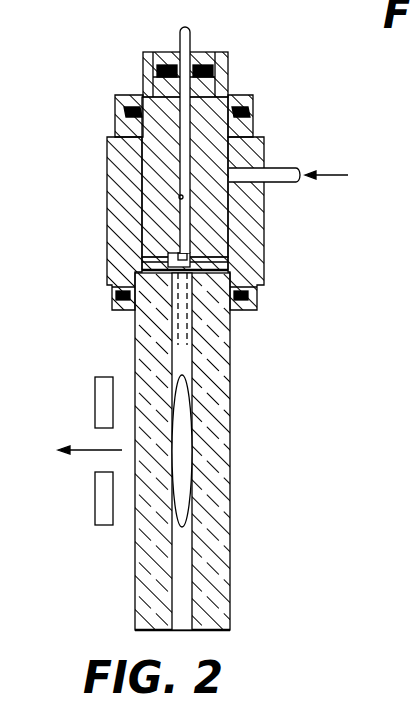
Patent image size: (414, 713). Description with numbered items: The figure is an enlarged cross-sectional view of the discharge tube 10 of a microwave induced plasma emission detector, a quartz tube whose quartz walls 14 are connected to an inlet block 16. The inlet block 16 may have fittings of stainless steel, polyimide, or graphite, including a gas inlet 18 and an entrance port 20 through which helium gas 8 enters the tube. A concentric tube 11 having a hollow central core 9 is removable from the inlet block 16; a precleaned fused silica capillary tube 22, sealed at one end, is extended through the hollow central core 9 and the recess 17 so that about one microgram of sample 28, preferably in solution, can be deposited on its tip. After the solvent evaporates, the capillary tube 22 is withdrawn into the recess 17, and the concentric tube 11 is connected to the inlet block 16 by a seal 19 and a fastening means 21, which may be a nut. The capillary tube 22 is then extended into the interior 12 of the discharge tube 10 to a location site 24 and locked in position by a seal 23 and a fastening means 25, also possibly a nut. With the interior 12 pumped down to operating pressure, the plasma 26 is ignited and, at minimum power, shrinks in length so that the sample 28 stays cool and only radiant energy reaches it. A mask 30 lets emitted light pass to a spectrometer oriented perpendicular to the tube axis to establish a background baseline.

The helium 8 is at (349, 164).
The hollow central core 9 is at (180, 197).
The discharge tube 10 is at (210, 320).
The concentric tube 11 is at (157, 163).
The interior 12 is at (188, 585).
The quartz walls 14 is at (231, 440).
The inlet block 16 is at (258, 225).
The recess 17 is at (170, 262).
The gas inlet 18 is at (297, 166).
The seal 19 is at (240, 115).
The entrance port 20 is at (200, 262).
The fastening means 21 is at (115, 98).
The capillary tube 22 is at (190, 42).
The seal 23 is at (155, 70).
The location site 24 is at (183, 347).
The fastening means 25 is at (147, 53).
The plasma 26 is at (185, 488).
The sample 28 is at (173, 253).
The mask 30 is at (95, 503).